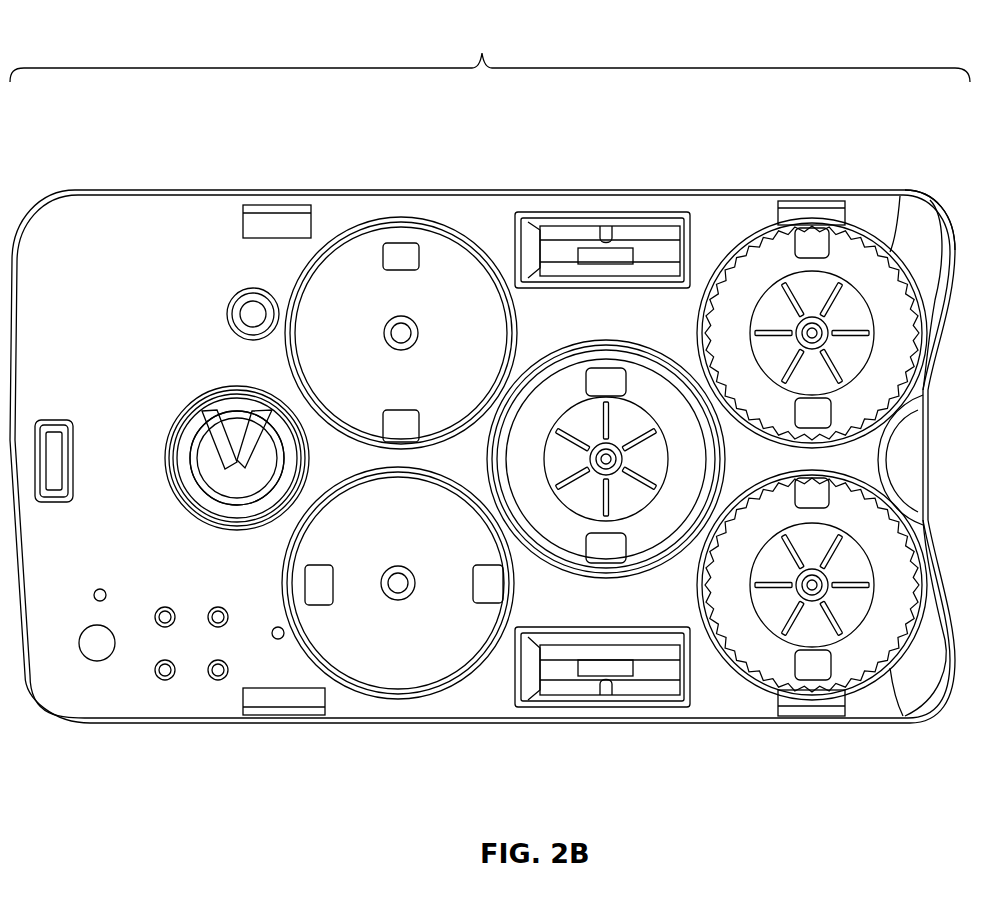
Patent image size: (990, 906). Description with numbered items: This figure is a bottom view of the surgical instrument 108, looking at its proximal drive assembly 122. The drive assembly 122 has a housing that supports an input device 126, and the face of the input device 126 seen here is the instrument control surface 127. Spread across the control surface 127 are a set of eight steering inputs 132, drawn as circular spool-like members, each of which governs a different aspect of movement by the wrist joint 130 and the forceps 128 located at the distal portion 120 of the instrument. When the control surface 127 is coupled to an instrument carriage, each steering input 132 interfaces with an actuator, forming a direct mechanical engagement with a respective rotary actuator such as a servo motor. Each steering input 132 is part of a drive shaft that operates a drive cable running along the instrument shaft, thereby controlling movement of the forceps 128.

The surgical instrument 108 is at (930, 740).
The distal portion 120 is at (194, 456).
The proximal drive assembly 122 is at (575, 740).
The input device 126 is at (930, 188).
The instrument control surface 127 is at (490, 54).
The forceps 128 is at (222, 445).
The wrist joint 130 is at (237, 463).
The steering inputs 132 is at (366, 220).